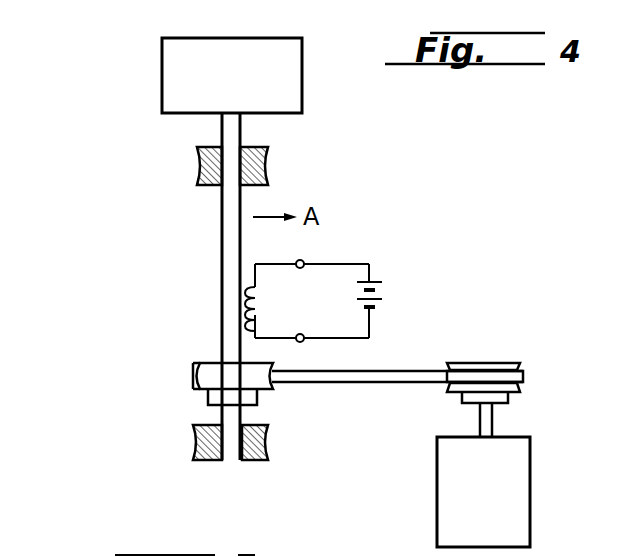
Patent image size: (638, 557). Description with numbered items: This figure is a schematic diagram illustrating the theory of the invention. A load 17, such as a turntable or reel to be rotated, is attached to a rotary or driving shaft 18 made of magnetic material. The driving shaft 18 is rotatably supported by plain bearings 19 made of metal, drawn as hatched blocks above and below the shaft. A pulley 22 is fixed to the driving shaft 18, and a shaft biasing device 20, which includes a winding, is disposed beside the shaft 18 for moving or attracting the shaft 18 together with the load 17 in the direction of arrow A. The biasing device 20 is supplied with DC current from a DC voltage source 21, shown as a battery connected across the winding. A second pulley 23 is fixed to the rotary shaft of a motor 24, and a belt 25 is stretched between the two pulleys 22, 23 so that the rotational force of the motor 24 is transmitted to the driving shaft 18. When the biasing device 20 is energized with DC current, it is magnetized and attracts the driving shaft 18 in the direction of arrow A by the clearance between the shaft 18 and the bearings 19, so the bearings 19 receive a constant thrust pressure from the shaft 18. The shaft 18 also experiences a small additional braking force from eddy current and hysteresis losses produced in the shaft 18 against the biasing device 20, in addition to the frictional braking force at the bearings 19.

The load 17 is at (302, 88).
The driving shaft 18 is at (222, 257).
The plain bearings 19 is at (267, 160).
The shaft biasing device 20 is at (266, 298).
The DC voltage source 21 is at (383, 291).
The pulley 22 is at (204, 363).
The pulley 23 is at (500, 363).
The motor 24 is at (530, 447).
The belt 25 is at (385, 385).